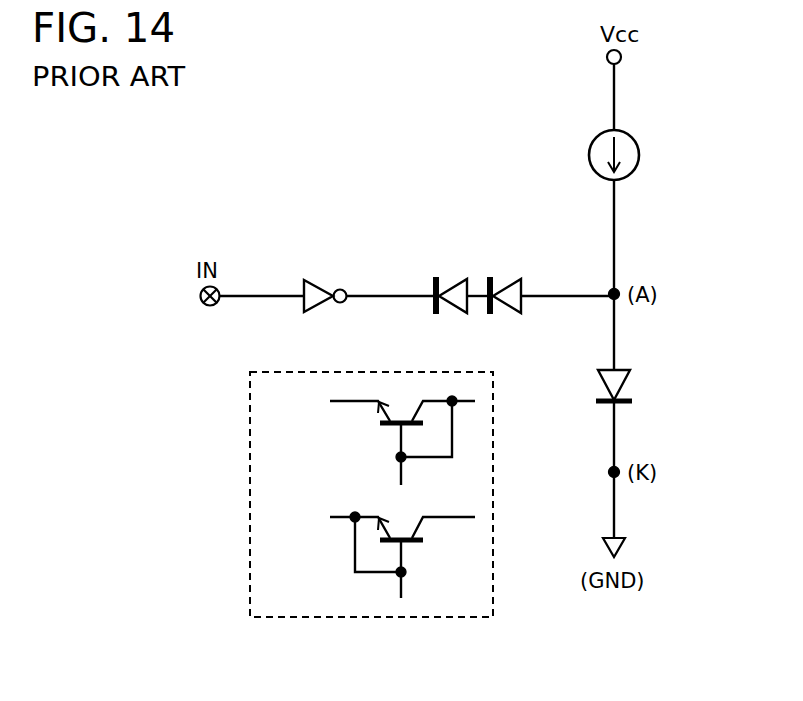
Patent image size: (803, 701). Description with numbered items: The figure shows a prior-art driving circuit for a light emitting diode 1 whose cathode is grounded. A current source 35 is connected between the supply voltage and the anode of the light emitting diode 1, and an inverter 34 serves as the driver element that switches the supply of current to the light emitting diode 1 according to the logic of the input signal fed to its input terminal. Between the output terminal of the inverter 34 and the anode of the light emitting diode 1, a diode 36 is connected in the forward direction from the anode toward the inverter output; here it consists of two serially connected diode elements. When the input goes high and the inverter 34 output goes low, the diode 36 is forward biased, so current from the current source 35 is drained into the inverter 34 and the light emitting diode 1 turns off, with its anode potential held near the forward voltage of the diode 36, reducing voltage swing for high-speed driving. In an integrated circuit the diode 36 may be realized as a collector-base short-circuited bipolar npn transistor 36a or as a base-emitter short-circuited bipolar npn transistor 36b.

The LED 1 is at (648, 394).
The inverter 34 is at (316, 281).
The current source 35 is at (640, 156).
The diode 36 is at (478, 269).
The collector-base short-circuited bipolar npn transistor 36a is at (350, 438).
The base-emitter short-circuited bipolar npn transistor 36b is at (340, 550).